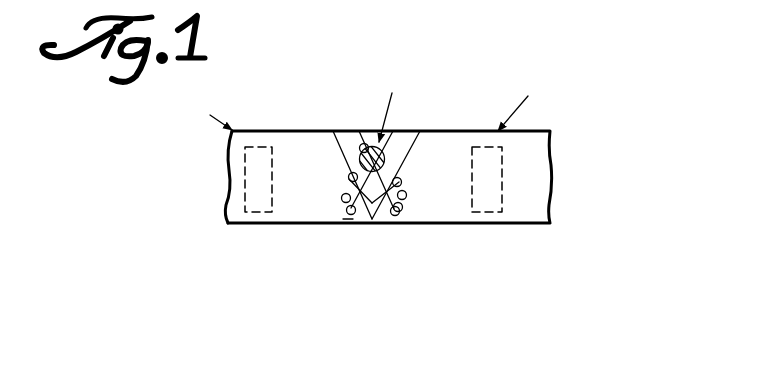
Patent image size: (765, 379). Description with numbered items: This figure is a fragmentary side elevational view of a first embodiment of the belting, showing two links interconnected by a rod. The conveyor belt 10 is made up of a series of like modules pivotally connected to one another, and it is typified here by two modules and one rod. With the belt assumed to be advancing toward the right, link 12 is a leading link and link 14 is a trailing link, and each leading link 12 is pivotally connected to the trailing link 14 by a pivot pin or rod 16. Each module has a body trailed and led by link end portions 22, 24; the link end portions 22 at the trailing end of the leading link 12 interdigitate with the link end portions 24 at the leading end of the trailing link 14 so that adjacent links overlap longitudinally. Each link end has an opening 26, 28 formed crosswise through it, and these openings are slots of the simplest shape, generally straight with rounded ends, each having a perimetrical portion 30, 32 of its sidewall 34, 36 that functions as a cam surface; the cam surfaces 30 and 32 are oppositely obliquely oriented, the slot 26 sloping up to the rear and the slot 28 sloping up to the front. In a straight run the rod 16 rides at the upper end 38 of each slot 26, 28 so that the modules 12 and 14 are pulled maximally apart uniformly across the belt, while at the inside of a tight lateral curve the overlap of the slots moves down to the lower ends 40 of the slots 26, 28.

The conveyor belt 10 is at (383, 58).
The leading link 12 is at (455, 219).
The trailing link 14 is at (225, 207).
The rod 16 is at (388, 144).
The link end portions 22 is at (333, 132).
The link end portions 24 is at (406, 156).
The slot 26 is at (403, 206).
The slot 28 is at (348, 218).
The cam surface 30 is at (402, 183).
The cam surface 32 is at (349, 178).
The sidewall 34 is at (407, 193).
The sidewall 36 is at (342, 198).
The upper end 38 is at (365, 144).
The lower ends 40 is at (344, 213).